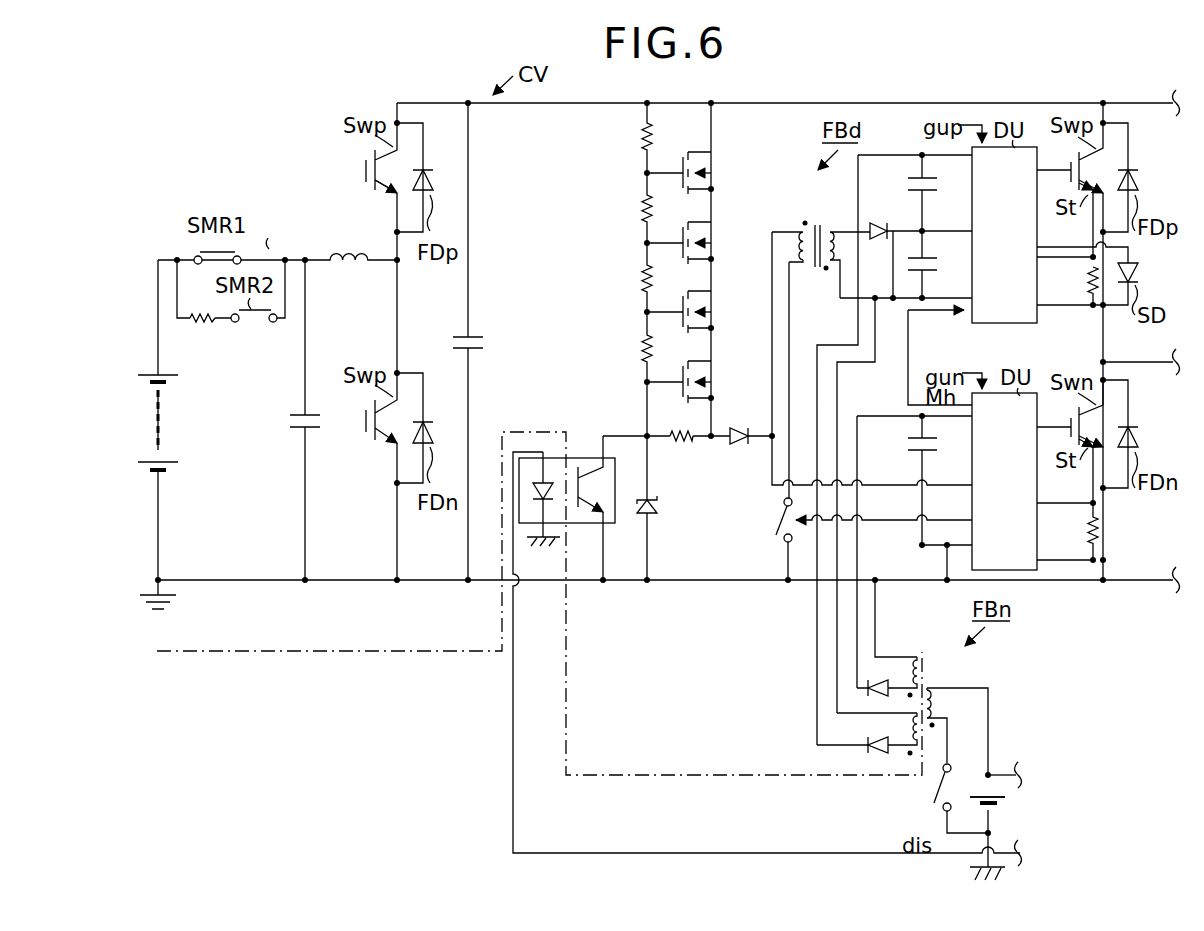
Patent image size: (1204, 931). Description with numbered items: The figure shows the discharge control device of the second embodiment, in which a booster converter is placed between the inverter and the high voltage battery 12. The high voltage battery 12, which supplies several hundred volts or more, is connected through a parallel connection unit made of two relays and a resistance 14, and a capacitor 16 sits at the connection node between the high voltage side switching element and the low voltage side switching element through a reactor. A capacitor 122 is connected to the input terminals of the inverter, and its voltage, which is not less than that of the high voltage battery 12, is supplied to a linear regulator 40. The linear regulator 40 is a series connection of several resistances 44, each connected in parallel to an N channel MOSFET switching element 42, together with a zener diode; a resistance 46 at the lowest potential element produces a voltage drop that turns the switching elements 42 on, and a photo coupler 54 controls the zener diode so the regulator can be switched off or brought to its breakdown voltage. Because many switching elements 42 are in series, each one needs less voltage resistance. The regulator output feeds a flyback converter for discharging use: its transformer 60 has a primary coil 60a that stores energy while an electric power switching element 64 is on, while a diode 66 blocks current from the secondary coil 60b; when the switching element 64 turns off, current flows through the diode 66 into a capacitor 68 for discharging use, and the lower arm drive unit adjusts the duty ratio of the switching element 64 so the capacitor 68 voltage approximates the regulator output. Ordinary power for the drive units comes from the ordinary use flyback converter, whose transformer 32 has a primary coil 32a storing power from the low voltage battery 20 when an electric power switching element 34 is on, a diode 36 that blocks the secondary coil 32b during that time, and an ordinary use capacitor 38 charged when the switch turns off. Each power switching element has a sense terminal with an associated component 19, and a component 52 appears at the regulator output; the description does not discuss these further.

The high voltage battery 12 is at (152, 375).
The resistance 14 is at (203, 322).
The capacitor 16 is at (322, 415).
The sense resistor 19 is at (1090, 271).
The low voltage battery 20 is at (970, 796).
The transformer 32 is at (927, 749).
The primary coil 32a is at (939, 688).
The secondary coil 32b is at (916, 655).
The electric power switching element 34 is at (935, 792).
The diode 36 is at (874, 698).
The ordinary use capacitor 38 is at (930, 196).
The linear regulator 40 is at (737, 95).
The switching element 42 is at (710, 160).
The resistance 44 is at (642, 137).
The resistance 46 is at (683, 442).
The diode 52 is at (740, 444).
The photo coupler 54 is at (587, 457).
The transformer 60 is at (821, 244).
The primary coil 60a is at (803, 262).
The secondary coil 60b is at (844, 247).
The electric power switching element 64 is at (779, 518).
The diode 66 is at (878, 219).
The capacitor for discharging use 68 is at (934, 261).
The capacitor 122 is at (351, 266).